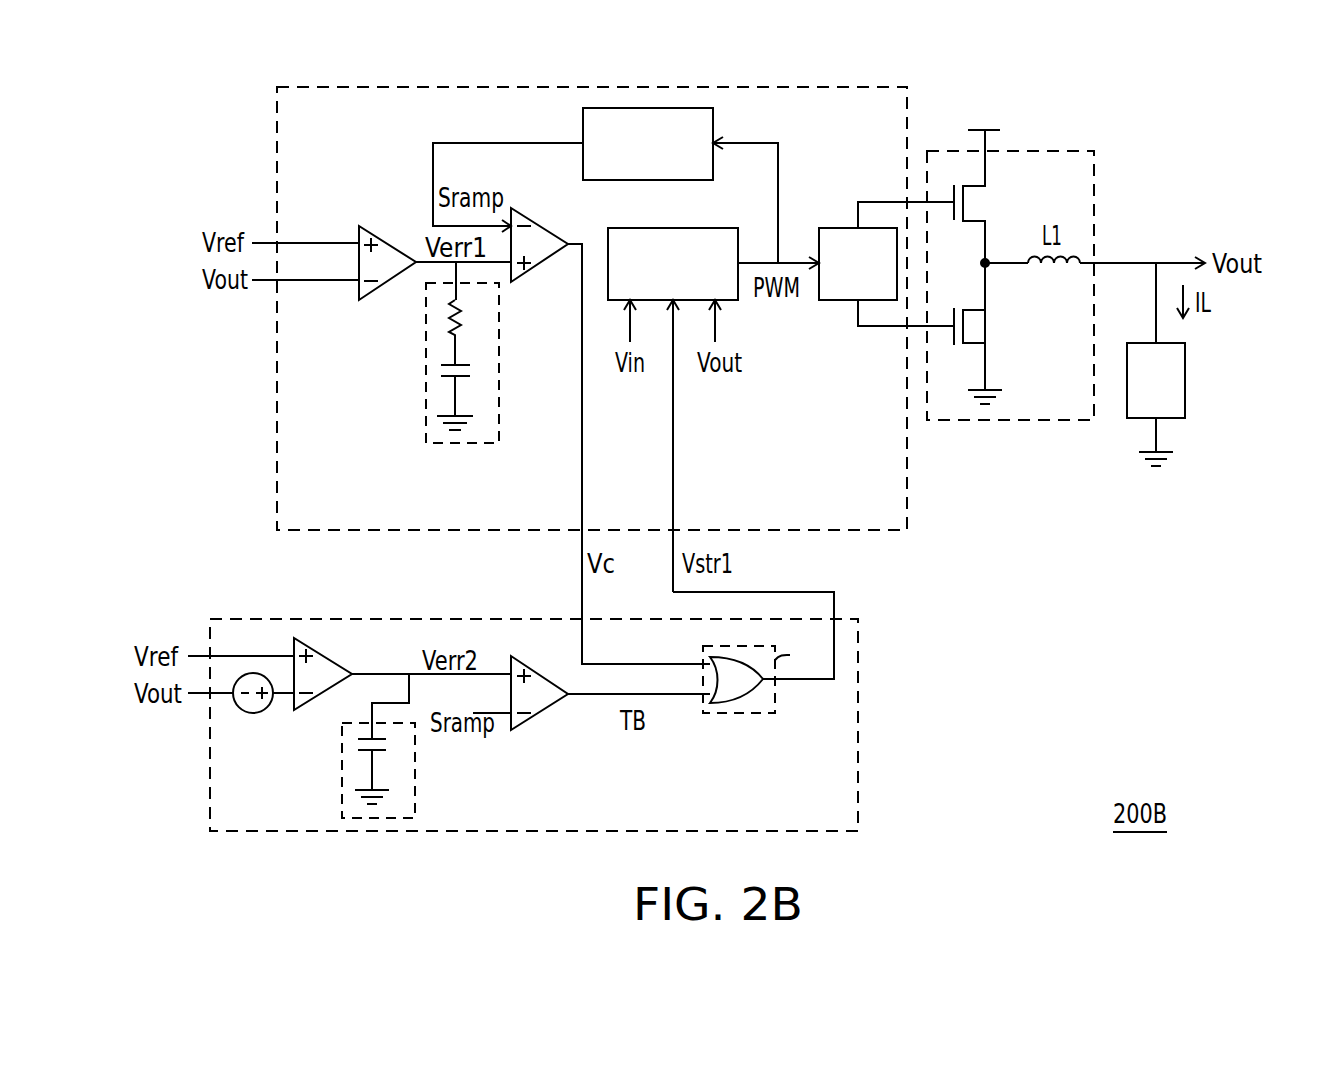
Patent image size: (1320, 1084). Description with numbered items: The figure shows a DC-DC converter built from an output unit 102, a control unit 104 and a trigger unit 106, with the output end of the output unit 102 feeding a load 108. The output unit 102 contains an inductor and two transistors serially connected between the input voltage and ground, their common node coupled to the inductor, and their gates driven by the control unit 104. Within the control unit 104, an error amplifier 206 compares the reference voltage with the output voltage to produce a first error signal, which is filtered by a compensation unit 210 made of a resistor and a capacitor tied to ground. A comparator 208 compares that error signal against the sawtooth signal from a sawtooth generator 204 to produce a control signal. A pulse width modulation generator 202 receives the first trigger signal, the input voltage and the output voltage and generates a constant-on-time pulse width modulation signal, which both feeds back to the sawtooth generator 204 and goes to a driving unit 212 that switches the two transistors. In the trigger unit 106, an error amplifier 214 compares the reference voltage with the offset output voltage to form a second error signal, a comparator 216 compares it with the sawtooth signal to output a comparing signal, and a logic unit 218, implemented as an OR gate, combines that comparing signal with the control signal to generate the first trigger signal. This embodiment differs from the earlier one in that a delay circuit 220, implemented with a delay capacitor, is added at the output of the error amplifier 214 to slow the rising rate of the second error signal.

The output unit 102 is at (1045, 150).
The control unit 104 is at (907, 487).
The trigger unit 106 is at (858, 690).
The load 108 is at (1185, 387).
The PWM generator 202 is at (685, 228).
The sawtooth generator 204 is at (713, 125).
The error amplifier 206 is at (388, 218).
The comparator 208 is at (545, 217).
The compensation unit 210 is at (472, 443).
The driving unit 212 is at (838, 228).
The error amplifier 214 is at (320, 650).
The comparator 216 is at (542, 713).
The logic unit 218 is at (745, 713).
The delay circuit 220 is at (342, 775).